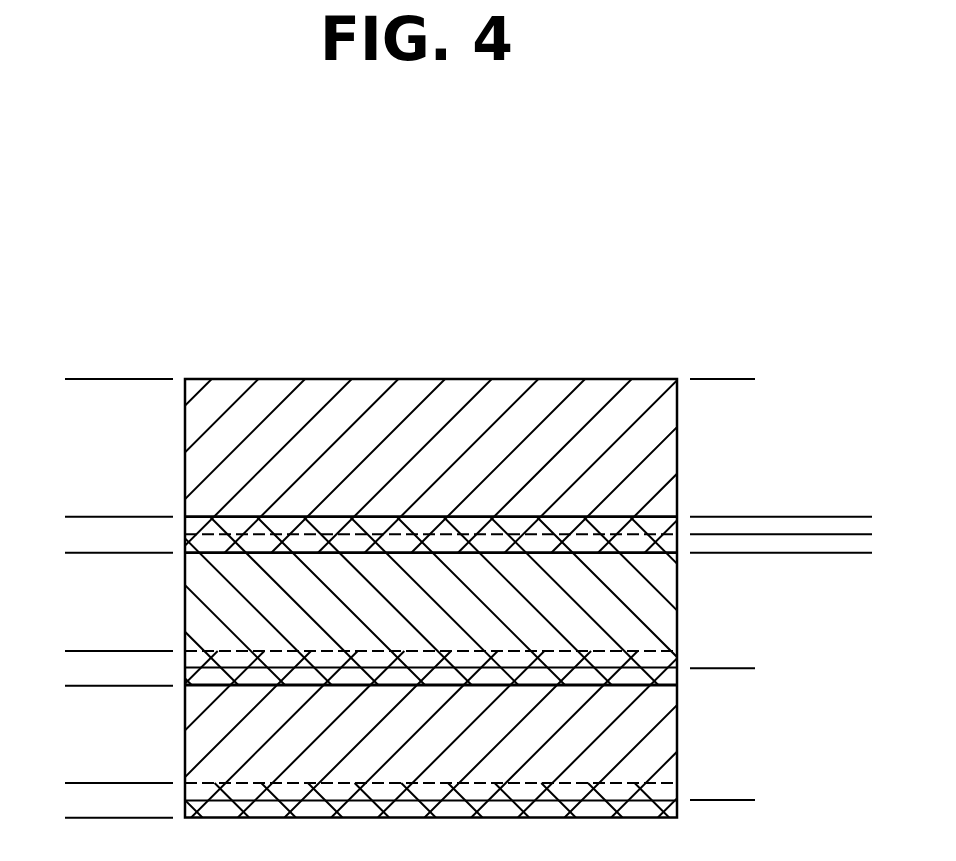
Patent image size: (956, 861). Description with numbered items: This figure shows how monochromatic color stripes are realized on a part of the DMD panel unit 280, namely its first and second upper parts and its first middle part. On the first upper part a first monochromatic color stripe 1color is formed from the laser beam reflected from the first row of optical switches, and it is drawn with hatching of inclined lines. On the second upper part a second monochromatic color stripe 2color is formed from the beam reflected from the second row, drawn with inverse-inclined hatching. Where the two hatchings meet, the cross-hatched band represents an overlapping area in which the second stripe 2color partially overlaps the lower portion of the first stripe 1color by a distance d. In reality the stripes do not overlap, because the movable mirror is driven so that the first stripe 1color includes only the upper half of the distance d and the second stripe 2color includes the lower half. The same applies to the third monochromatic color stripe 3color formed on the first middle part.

The panel unit 280 is at (563, 379).
The first monochromatic color stripe 1color is at (92, 379).
The second monochromatic color stripe 2color is at (119, 517).
The third monochromatic color stripe 3color is at (155, 651).
The overlapping distance d is at (823, 588).